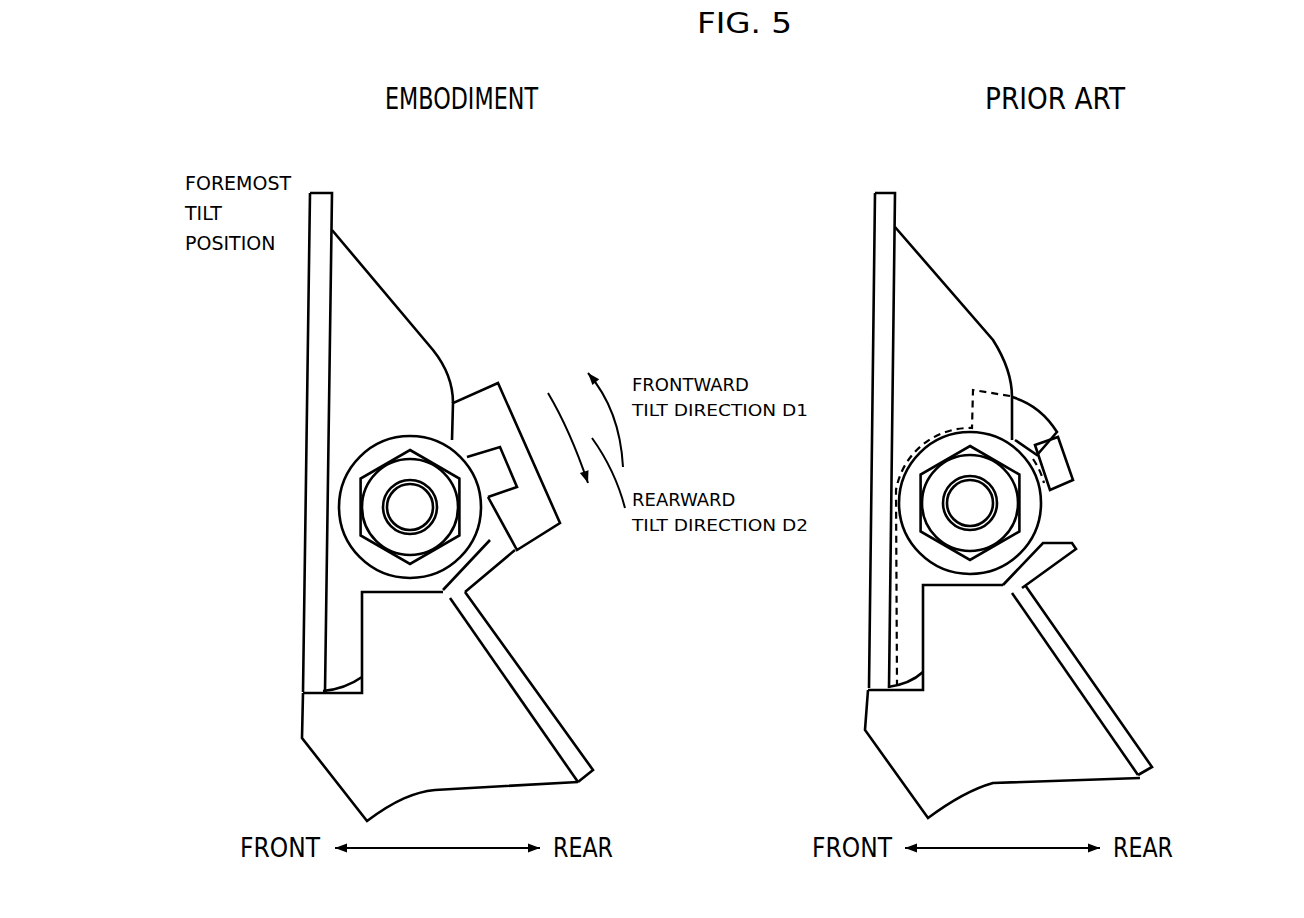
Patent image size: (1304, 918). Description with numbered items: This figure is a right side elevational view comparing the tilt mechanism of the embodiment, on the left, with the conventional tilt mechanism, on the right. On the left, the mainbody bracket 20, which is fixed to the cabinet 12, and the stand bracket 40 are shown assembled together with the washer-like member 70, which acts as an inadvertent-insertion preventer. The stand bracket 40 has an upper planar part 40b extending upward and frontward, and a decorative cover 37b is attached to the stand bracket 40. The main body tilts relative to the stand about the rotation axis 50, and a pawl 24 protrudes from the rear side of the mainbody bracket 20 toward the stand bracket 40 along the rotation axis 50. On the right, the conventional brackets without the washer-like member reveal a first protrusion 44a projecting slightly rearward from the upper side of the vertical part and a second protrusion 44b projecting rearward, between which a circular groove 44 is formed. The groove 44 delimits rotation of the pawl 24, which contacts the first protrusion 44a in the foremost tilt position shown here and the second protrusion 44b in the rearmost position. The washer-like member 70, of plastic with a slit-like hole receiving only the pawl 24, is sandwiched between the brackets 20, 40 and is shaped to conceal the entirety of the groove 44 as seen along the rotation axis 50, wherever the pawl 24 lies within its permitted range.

The cabinet 12 is at (297, 370).
The mainbody bracket 20 is at (385, 258).
The pawl 24 is at (500, 477).
The decorative cover 37b is at (328, 722).
The stand bracket 40 is at (548, 692).
The upper planar part 40b is at (598, 760).
The groove 44 is at (1060, 511).
The first protrusion 44a is at (1035, 410).
The second protrusion 44b is at (1072, 550).
The rotation axis 50 is at (410, 507).
The washer-like member 70 is at (493, 380).